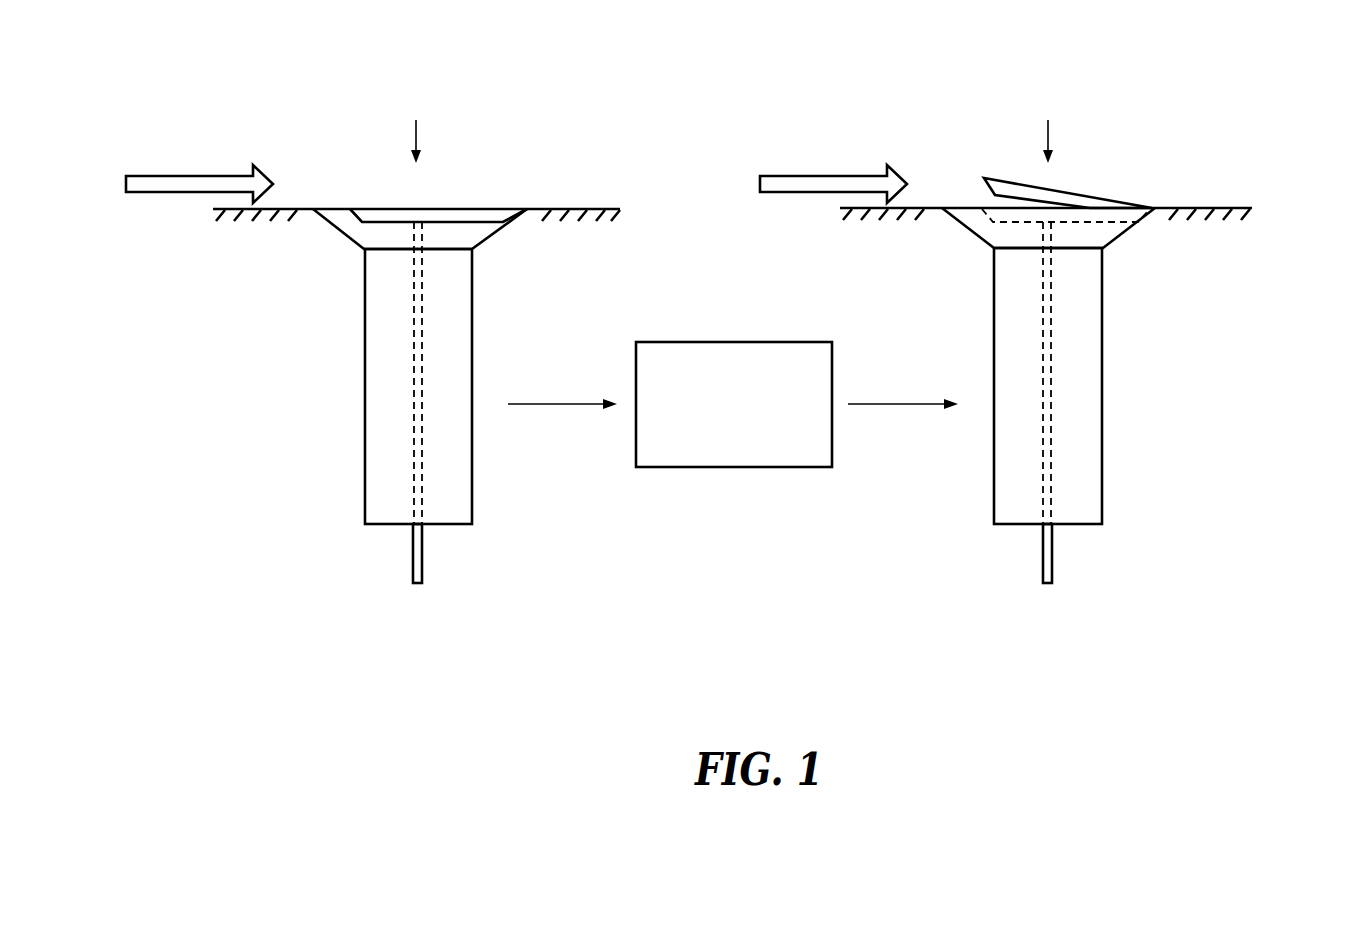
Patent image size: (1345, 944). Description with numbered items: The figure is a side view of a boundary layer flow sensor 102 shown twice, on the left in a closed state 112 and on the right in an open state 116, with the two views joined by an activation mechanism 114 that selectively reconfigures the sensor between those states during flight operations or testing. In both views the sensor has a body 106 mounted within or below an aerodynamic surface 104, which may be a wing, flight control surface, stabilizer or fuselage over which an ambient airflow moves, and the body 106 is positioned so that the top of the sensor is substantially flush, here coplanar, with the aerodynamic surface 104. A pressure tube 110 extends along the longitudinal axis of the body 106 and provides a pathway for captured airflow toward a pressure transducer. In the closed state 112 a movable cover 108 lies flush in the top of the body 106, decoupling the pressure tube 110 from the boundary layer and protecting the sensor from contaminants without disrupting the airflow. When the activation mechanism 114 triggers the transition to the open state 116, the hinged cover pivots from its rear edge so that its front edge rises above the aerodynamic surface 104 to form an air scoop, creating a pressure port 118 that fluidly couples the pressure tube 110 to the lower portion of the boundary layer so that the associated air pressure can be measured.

The boundary layer flow sensor 102 is at (211, 64).
The aerodynamic surface 104 is at (550, 208).
The body 106 is at (370, 309).
The movable cover 108 is at (435, 215).
The pressure tube 110 is at (416, 360).
The closed state 112 is at (418, 129).
The activation mechanism 114 is at (733, 404).
The open state 116 is at (1049, 129).
The pressure port 118 is at (966, 184).